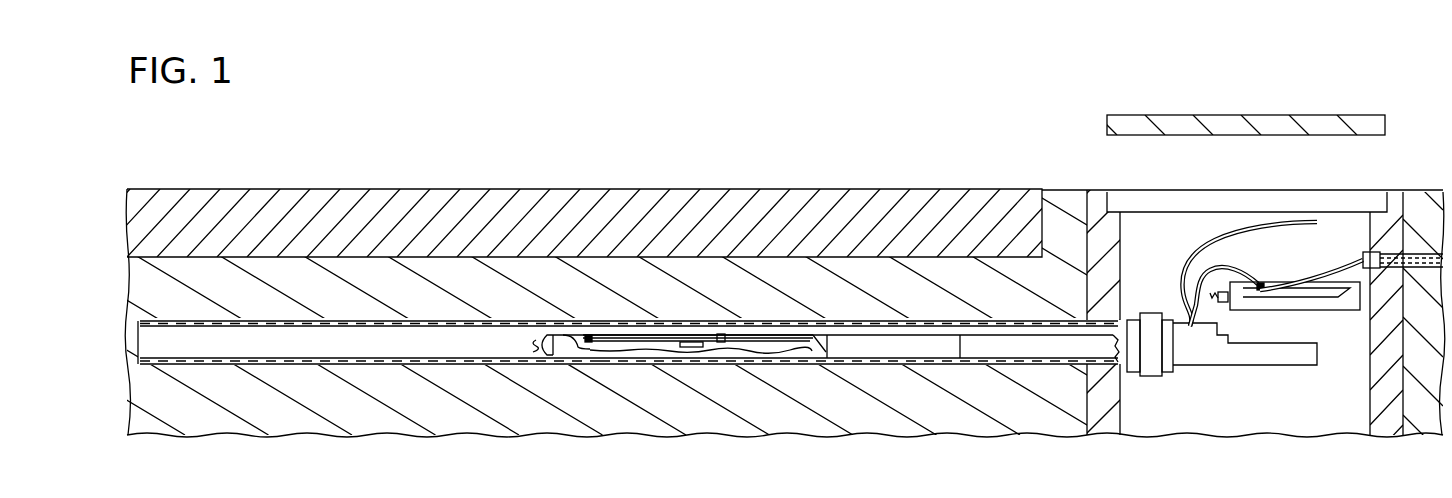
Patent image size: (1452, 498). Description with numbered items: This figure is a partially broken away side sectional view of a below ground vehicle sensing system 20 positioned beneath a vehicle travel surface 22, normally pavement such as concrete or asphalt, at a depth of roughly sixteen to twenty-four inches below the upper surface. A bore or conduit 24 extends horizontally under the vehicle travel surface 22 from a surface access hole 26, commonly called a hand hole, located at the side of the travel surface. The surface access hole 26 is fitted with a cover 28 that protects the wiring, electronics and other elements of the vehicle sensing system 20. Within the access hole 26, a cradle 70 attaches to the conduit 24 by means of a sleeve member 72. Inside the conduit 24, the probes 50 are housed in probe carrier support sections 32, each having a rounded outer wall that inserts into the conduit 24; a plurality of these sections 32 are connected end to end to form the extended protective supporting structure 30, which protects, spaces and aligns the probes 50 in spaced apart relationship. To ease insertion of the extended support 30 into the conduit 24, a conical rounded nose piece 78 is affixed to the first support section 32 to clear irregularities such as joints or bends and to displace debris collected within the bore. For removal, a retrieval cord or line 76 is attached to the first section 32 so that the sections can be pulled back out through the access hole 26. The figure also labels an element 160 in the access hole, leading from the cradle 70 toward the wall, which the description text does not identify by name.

The vehicle sensing system 20 is at (850, 110).
The vehicle travel surface 22 is at (600, 193).
The conduit 24 is at (324, 328).
The surface access hole 26 is at (1333, 217).
The cover 28 is at (1318, 113).
The extended protective supporting structure 30 is at (857, 332).
The probe carrier support section 32 is at (670, 353).
The probe 50 is at (720, 333).
The cradle 70 is at (1220, 362).
The sleeve member 72 is at (1152, 376).
The retrieval cord 76 is at (1250, 222).
The conical rounded nose piece 78 is at (530, 323).
The circuit board connector 160 is at (1330, 262).